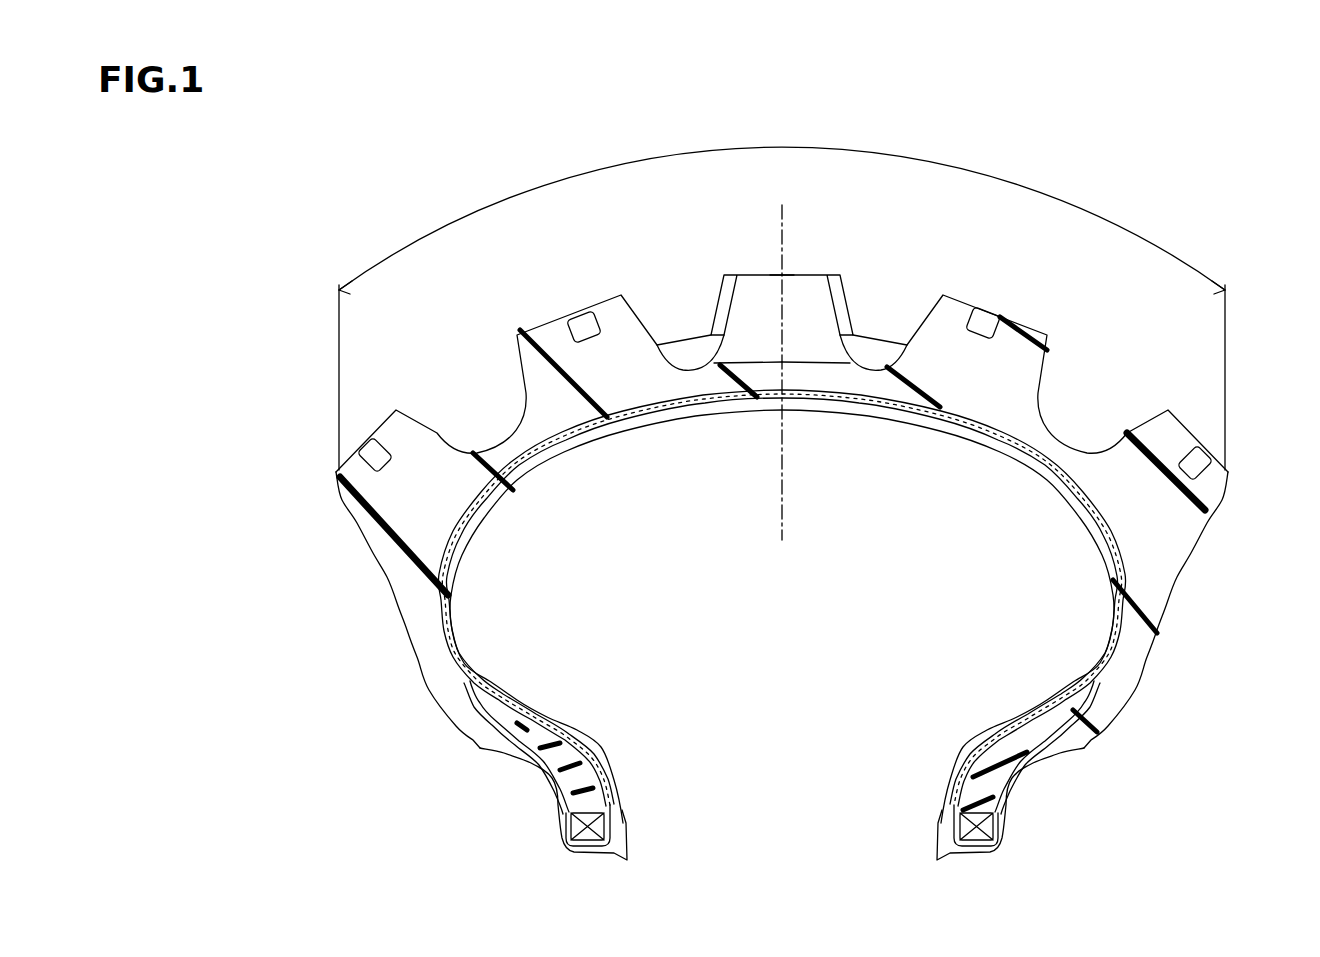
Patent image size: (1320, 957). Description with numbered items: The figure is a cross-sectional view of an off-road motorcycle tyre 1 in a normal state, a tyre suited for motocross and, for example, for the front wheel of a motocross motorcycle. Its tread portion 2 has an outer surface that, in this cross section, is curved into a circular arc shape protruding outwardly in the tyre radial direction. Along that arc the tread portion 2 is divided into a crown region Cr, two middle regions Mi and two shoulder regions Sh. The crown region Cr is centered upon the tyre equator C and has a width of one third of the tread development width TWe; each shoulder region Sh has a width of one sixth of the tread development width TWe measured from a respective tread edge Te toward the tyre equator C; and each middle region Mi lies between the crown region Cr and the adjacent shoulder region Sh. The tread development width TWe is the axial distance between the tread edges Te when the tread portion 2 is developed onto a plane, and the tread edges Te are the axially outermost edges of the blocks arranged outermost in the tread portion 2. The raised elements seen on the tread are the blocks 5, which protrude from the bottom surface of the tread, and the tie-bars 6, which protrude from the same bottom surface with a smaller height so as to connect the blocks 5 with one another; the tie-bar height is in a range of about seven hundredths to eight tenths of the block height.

The motorcycle tyre for off-road 1 is at (877, 272).
The tread portion 2 is at (598, 276).
The blocks 5 is at (763, 270).
The tie-bars 6 is at (680, 325).
The tyre equator C is at (780, 356).
The crown region Cr is at (808, 268).
The middle regions Mi is at (548, 312).
The shoulder regions Sh is at (380, 418).
The tread edges Te is at (338, 470).
The tread development width TWe is at (782, 201).